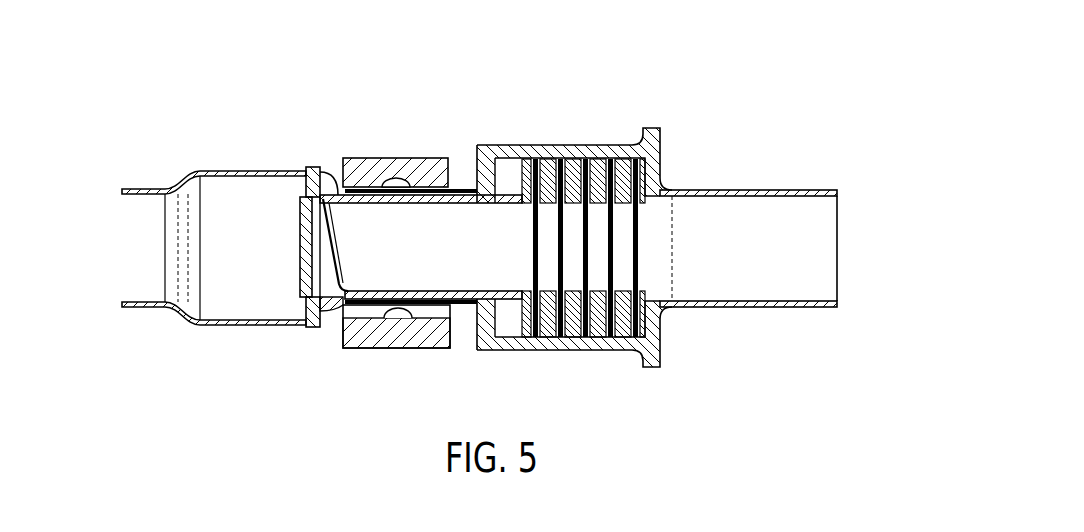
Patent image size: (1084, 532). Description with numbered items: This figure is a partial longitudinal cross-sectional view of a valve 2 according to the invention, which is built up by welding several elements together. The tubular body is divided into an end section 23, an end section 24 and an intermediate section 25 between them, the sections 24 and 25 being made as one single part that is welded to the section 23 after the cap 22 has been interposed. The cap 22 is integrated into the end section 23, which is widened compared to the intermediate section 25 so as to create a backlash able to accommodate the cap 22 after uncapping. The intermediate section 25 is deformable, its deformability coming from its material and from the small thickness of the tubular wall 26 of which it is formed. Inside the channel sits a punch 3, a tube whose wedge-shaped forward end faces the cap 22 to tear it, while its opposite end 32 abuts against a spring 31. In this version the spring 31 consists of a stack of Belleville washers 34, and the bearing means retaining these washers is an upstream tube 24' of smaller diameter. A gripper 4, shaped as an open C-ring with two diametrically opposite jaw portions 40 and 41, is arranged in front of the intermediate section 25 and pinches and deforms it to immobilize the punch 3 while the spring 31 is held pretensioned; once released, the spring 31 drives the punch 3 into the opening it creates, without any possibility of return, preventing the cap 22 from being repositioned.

The valve 2 is at (688, 122).
The punch 3 is at (413, 275).
The gripper 4 is at (362, 152).
The cap 22 is at (303, 283).
The end section 23 is at (251, 167).
The end section 24 is at (574, 208).
The upstream tube 24' is at (748, 206).
The intermediate section 25 is at (463, 164).
The tubular wall 26 is at (380, 306).
The spring 31 is at (621, 329).
The end of punch 32 is at (332, 307).
The Belleville washers 34 is at (588, 335).
The jaw portion 40 is at (398, 168).
The jaw portion 41 is at (363, 332).